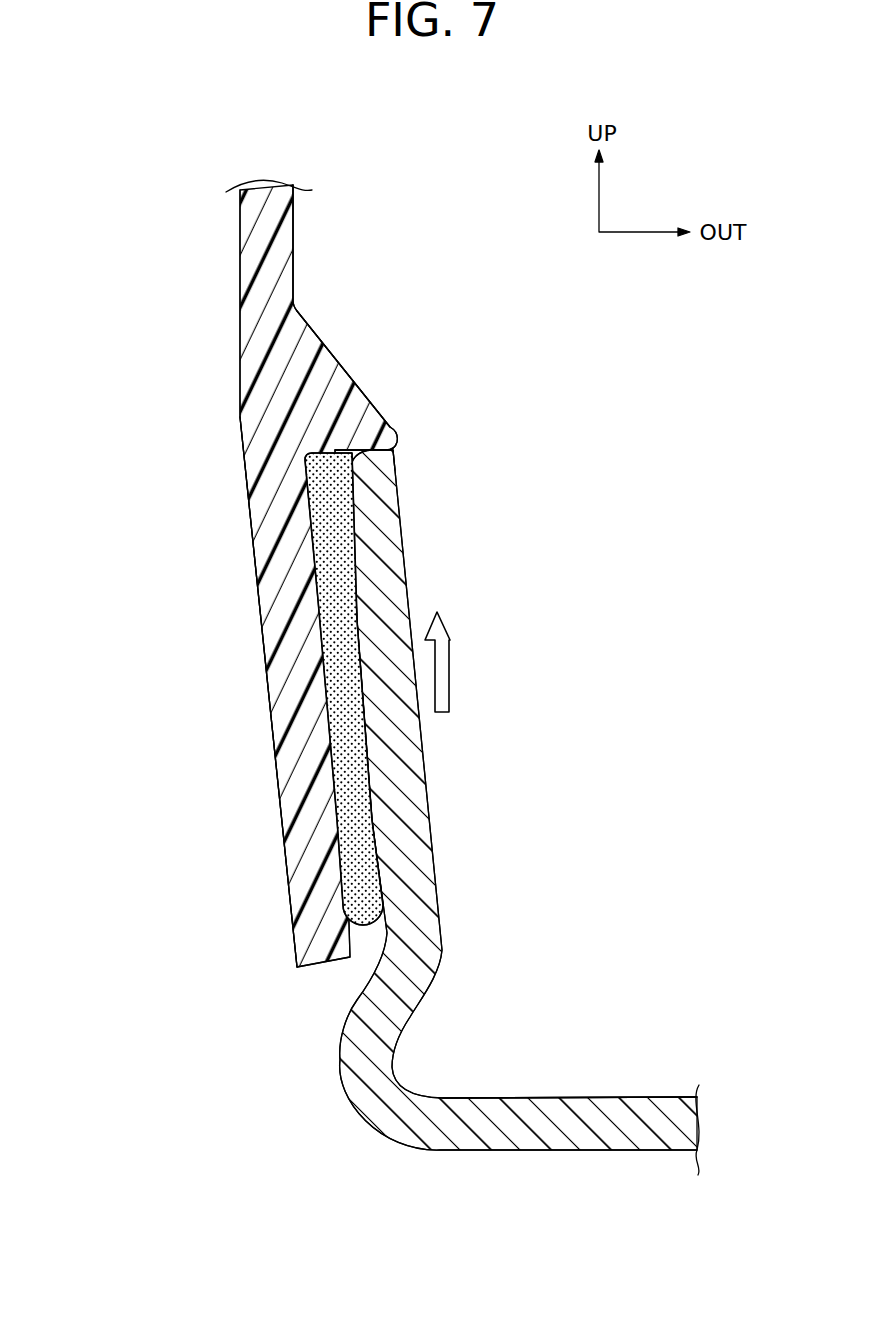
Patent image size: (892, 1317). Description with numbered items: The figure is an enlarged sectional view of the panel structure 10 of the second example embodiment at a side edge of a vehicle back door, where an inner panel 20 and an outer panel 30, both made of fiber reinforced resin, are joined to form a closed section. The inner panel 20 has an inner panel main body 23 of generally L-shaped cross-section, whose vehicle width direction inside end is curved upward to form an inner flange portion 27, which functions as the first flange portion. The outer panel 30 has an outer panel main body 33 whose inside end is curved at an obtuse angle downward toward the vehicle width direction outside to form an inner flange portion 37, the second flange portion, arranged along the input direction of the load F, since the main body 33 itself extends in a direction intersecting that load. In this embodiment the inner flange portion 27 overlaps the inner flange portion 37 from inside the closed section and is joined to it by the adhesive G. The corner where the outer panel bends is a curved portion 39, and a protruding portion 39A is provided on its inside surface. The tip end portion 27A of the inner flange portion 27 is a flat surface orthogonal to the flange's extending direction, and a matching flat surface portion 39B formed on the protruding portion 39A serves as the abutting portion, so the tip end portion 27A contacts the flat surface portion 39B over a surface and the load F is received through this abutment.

The panel structure 10 is at (393, 718).
The inner panel 20 is at (519, 820).
The inner panel main body 23 is at (633, 1097).
The inner flange portion 27 is at (519, 779).
The tip end portion 27A is at (392, 427).
The outer panel 30 is at (291, 573).
The outer panel main body 33 is at (293, 243).
The inner flange portion 37 is at (265, 697).
The curved portion 39 is at (323, 573).
The protruding portion 39A is at (363, 393).
The flat surface portion 39B is at (352, 465).
The adhesive G is at (363, 853).
The load F is at (470, 662).